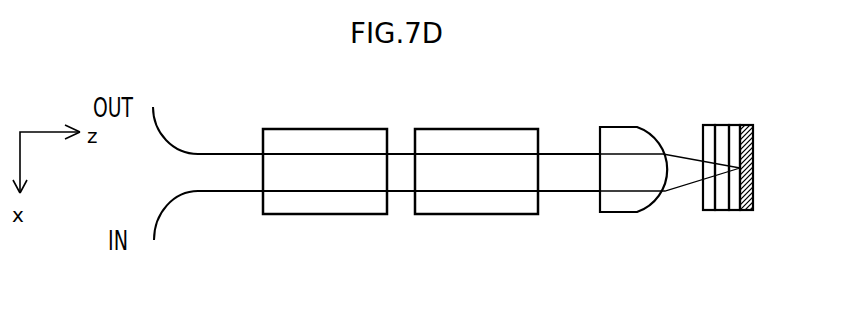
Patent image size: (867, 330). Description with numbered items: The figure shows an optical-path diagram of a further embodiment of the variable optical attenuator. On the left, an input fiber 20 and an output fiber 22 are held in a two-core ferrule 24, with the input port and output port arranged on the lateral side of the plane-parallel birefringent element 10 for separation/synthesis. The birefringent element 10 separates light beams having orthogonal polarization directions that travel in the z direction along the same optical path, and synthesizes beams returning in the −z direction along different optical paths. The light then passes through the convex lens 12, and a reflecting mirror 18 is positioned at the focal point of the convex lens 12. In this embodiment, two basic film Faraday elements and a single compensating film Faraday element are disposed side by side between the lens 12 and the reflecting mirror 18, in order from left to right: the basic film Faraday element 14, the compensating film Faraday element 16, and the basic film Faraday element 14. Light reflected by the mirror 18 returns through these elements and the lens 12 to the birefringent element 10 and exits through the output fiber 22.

The plane-parallel birefringent element for separation/synthesis 10 is at (460, 138).
The convex lens 12 is at (640, 137).
The basic film Faraday element 14 is at (710, 203).
The compensating film Faraday element 16 is at (722, 125).
The reflecting mirror 18 is at (752, 140).
The input fiber 20 is at (227, 195).
The output fiber 22 is at (225, 151).
The two-core ferrule 24 is at (330, 138).